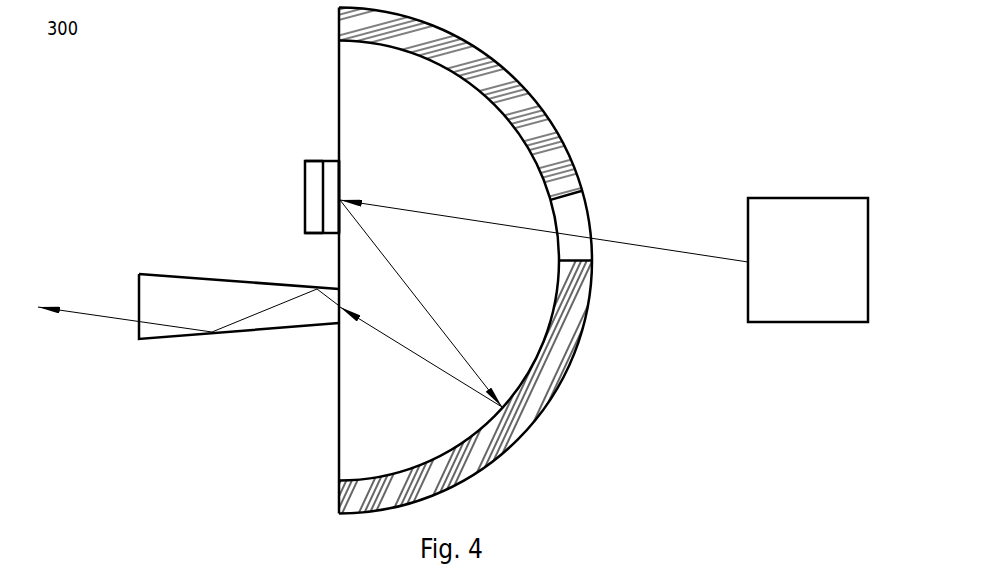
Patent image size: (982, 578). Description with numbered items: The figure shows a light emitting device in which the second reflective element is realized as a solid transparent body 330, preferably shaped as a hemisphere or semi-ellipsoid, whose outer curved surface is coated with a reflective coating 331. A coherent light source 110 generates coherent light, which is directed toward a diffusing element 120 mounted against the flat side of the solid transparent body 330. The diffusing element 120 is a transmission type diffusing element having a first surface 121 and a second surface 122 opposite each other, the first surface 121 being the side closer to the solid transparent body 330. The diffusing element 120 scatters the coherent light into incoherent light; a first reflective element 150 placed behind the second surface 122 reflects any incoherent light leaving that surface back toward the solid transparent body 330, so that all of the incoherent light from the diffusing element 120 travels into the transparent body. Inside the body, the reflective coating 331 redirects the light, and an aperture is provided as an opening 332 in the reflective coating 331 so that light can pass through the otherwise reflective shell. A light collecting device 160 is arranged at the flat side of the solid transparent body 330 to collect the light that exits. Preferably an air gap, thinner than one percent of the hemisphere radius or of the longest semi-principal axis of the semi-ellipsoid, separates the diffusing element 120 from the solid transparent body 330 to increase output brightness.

The coherent light source 110 is at (809, 330).
The diffusing element 120 is at (329, 153).
The first surface 121 is at (341, 175).
The second surface 122 is at (320, 192).
The first reflective element 150 is at (313, 153).
The light collecting device 160 is at (182, 340).
The solid transparent body 330 is at (338, 370).
The reflective coating 331 is at (543, 403).
The opening 332 is at (575, 218).